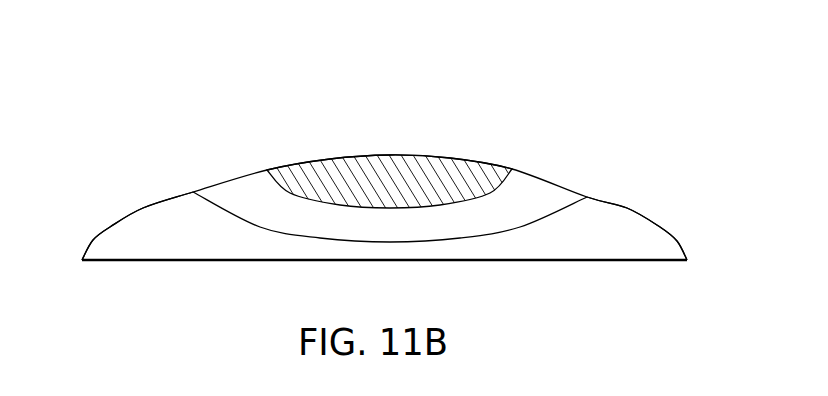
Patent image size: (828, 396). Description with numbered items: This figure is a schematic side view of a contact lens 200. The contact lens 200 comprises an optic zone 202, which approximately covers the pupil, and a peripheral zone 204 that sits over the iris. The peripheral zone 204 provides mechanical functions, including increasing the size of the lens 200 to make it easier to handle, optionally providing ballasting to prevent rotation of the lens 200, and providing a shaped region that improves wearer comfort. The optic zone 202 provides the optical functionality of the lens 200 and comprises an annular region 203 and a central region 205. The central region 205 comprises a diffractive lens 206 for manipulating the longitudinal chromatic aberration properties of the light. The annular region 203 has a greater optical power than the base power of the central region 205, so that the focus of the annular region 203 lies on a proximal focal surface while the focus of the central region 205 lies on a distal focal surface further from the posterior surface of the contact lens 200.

The contact lens 200 is at (198, 115).
The optic zone 202 is at (189, 176).
The annular region 203 is at (542, 180).
The peripheral zone 204 is at (620, 218).
The central region 205 is at (463, 157).
The diffractive lens 206 is at (382, 168).